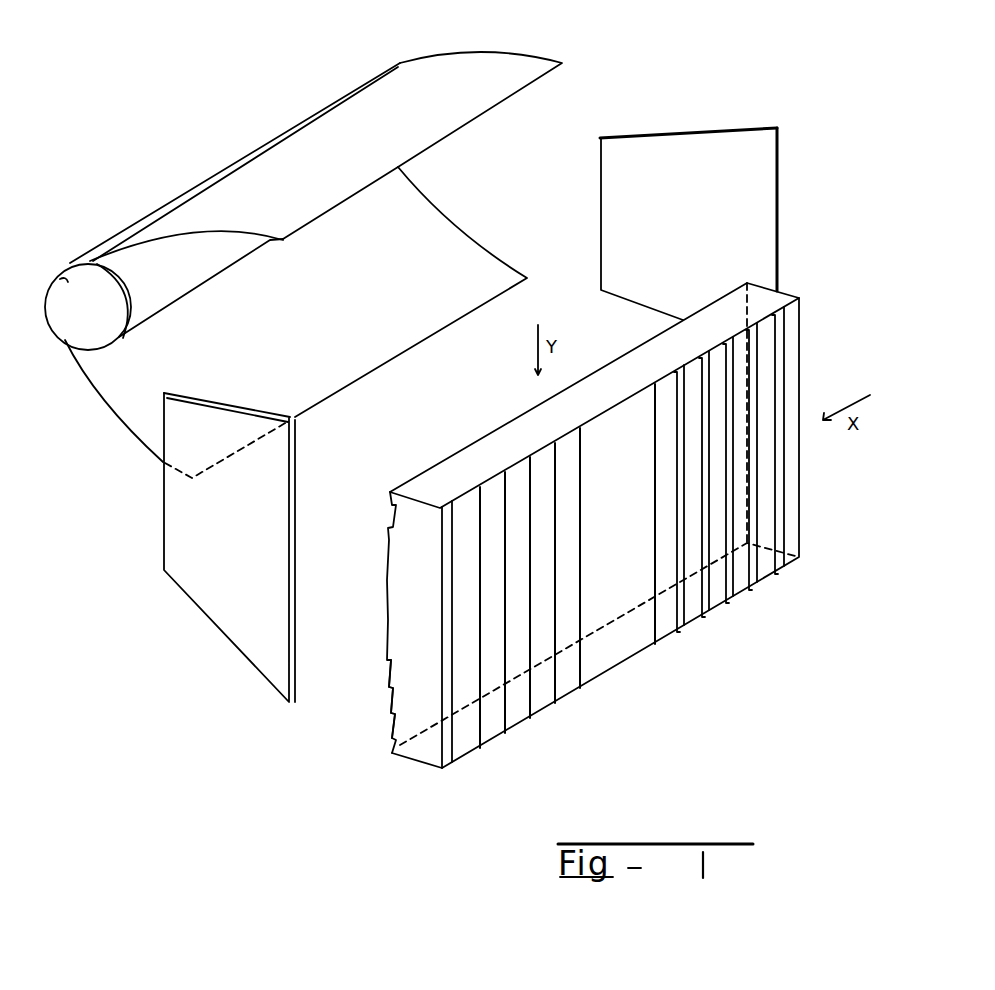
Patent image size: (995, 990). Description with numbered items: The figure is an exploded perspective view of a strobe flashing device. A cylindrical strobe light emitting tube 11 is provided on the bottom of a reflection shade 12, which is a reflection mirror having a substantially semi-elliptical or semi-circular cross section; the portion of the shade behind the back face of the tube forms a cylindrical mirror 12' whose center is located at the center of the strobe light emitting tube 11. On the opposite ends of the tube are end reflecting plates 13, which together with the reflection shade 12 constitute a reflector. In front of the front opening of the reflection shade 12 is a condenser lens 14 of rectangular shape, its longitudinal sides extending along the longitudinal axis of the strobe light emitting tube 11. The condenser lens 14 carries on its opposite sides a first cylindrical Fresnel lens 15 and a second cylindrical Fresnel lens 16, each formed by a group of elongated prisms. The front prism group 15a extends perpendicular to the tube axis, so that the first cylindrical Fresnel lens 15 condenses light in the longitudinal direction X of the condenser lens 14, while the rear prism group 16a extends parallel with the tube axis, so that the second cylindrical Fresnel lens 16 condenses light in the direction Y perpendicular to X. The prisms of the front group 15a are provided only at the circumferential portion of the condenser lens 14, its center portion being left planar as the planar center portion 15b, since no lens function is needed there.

The strobe light emitting tube 11 is at (187, 283).
The reflection shade 12 is at (316, 234).
The cylindrical mirror 12' is at (50, 254).
The end reflecting plates 13 is at (222, 613).
The condenser lens 14 is at (608, 388).
The first cylindrical Fresnel lens 15 is at (670, 625).
The front prism group 15a is at (542, 698).
The planar center portion 15b is at (622, 646).
The second cylindrical Fresnel lens 16 is at (388, 548).
The rear prism group 16a is at (395, 732).